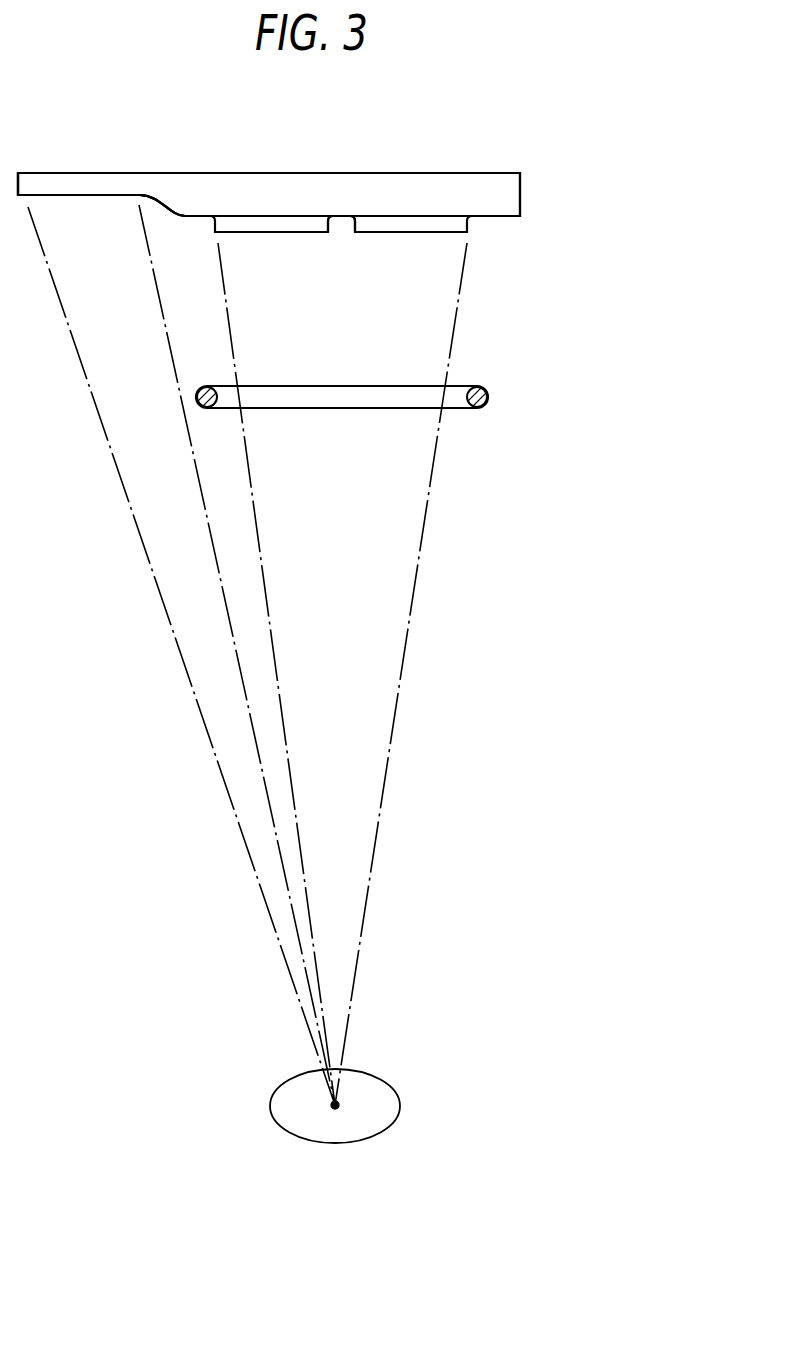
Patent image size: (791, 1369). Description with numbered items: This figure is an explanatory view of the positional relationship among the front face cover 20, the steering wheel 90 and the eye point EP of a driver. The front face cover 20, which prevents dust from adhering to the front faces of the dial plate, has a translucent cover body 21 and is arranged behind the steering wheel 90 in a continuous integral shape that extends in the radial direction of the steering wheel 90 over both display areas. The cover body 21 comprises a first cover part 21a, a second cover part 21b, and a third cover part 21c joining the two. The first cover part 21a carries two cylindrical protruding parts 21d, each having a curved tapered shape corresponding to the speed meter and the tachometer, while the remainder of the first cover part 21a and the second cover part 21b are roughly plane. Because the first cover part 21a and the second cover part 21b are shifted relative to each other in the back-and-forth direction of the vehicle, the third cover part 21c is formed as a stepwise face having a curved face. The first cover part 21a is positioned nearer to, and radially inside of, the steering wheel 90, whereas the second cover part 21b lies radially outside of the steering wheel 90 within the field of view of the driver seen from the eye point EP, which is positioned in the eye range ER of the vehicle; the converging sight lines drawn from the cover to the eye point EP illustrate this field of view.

The front face cover 20 is at (535, 182).
The cover body 21 is at (520, 200).
The first cover part 21a is at (342, 219).
The second cover part 21b is at (73, 196).
The third cover part 21c is at (155, 207).
The cylindrical protruding parts 21d is at (273, 222).
The steering wheel 90 is at (488, 397).
The eye range ER is at (400, 1106).
The eye point EP is at (335, 1105).